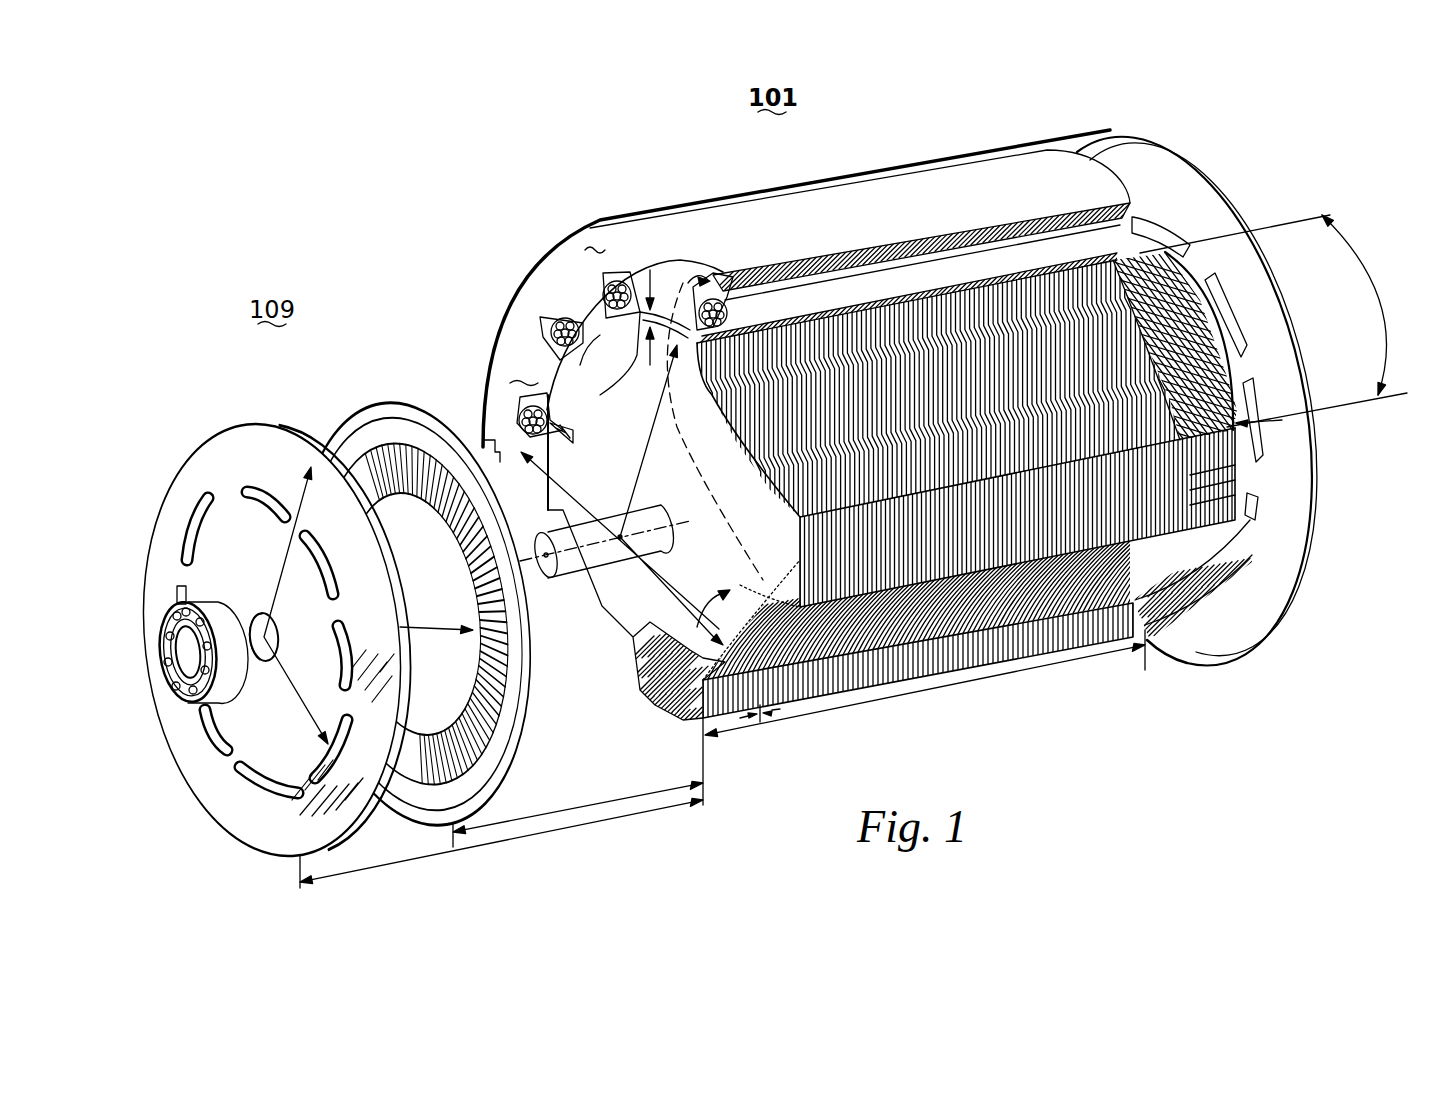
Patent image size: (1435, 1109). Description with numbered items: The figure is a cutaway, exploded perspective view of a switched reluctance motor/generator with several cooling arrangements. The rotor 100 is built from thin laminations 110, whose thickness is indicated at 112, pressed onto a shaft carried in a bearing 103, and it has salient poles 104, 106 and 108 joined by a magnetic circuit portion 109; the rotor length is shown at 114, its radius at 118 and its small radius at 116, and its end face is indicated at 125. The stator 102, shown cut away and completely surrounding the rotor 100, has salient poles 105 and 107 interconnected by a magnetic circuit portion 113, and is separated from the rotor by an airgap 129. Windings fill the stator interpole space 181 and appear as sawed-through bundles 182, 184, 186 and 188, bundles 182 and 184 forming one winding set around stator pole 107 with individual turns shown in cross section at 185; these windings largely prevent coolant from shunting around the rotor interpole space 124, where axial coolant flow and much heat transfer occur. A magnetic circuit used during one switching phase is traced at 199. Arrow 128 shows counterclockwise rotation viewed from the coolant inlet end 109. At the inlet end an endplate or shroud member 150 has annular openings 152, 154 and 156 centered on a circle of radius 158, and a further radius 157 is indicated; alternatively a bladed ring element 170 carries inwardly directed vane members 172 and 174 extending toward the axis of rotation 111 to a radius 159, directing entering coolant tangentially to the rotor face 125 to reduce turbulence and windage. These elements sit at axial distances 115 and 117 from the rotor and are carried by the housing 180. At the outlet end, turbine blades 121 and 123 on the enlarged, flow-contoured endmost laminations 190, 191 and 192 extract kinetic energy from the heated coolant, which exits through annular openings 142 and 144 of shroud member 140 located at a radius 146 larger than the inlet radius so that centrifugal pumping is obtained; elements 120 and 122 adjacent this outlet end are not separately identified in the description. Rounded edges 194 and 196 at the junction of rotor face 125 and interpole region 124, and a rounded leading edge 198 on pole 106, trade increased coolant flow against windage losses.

The rotor 100 is at (1000, 667).
The stator member 102 is at (966, 356).
The bearing 103 is at (180, 596).
The salient pole 104 is at (690, 720).
The stator salient pole 105 is at (525, 371).
The salient pole 106 is at (800, 612).
The stator salient pole 107 is at (625, 268).
The salient pole 108 is at (708, 387).
The coolant inlet end 109 is at (615, 473).
The laminations 110 is at (833, 697).
The axis of rotation 111 is at (602, 548).
The lamination thickness 112 is at (770, 713).
The magnetic circuit portion 113 is at (627, 272).
The rotor length 114 is at (920, 697).
The axial distance 115 is at (610, 788).
The rotor small radius 116 is at (672, 580).
The axial distance 117 is at (390, 867).
The rotor radius 118 is at (566, 439).
The end frame 120 is at (1140, 257).
The turbine blade 121 is at (1220, 317).
The end frame tab 122 is at (1262, 517).
The turbine blade 123 is at (1233, 660).
The rotor interpole space 124 is at (1372, 320).
The rotor face 125 is at (661, 458).
The rotation arrow 128 is at (697, 626).
The airgap 129 is at (652, 270).
The endplate or shroud member 140 is at (1200, 151).
The annular opening 142 is at (1214, 290).
The annular opening 144 is at (1253, 437).
The radius 146 is at (1323, 390).
The endplate or shroud member 150 is at (277, 622).
The annular opening 152 is at (208, 522).
The annular opening 154 is at (195, 590).
The annular opening 156 is at (208, 705).
The radius 157 is at (280, 591).
The radius 158 is at (297, 716).
The radius 159 is at (417, 626).
The bladed ring element 170 is at (462, 588).
The blade vane member 172 is at (470, 750).
The blade vane member 174 is at (467, 737).
The housing 180 is at (907, 166).
The stator interpole space 181 is at (566, 290).
The winding bundle 182 is at (843, 255).
The winding bundle 184 is at (605, 283).
The winding turns 185 is at (728, 298).
The winding bundle 186 is at (547, 323).
The winding bundle 188 is at (522, 412).
The endmost rotor lamination 190 is at (1207, 500).
The endmost rotor lamination 191 is at (1200, 485).
The endmost rotor lamination 192 is at (1197, 473).
The rounded edge 194 is at (657, 720).
The rounded edge 196 is at (580, 366).
The rounded leading edge 198 is at (763, 513).
The magnetic circuit 199 is at (683, 275).